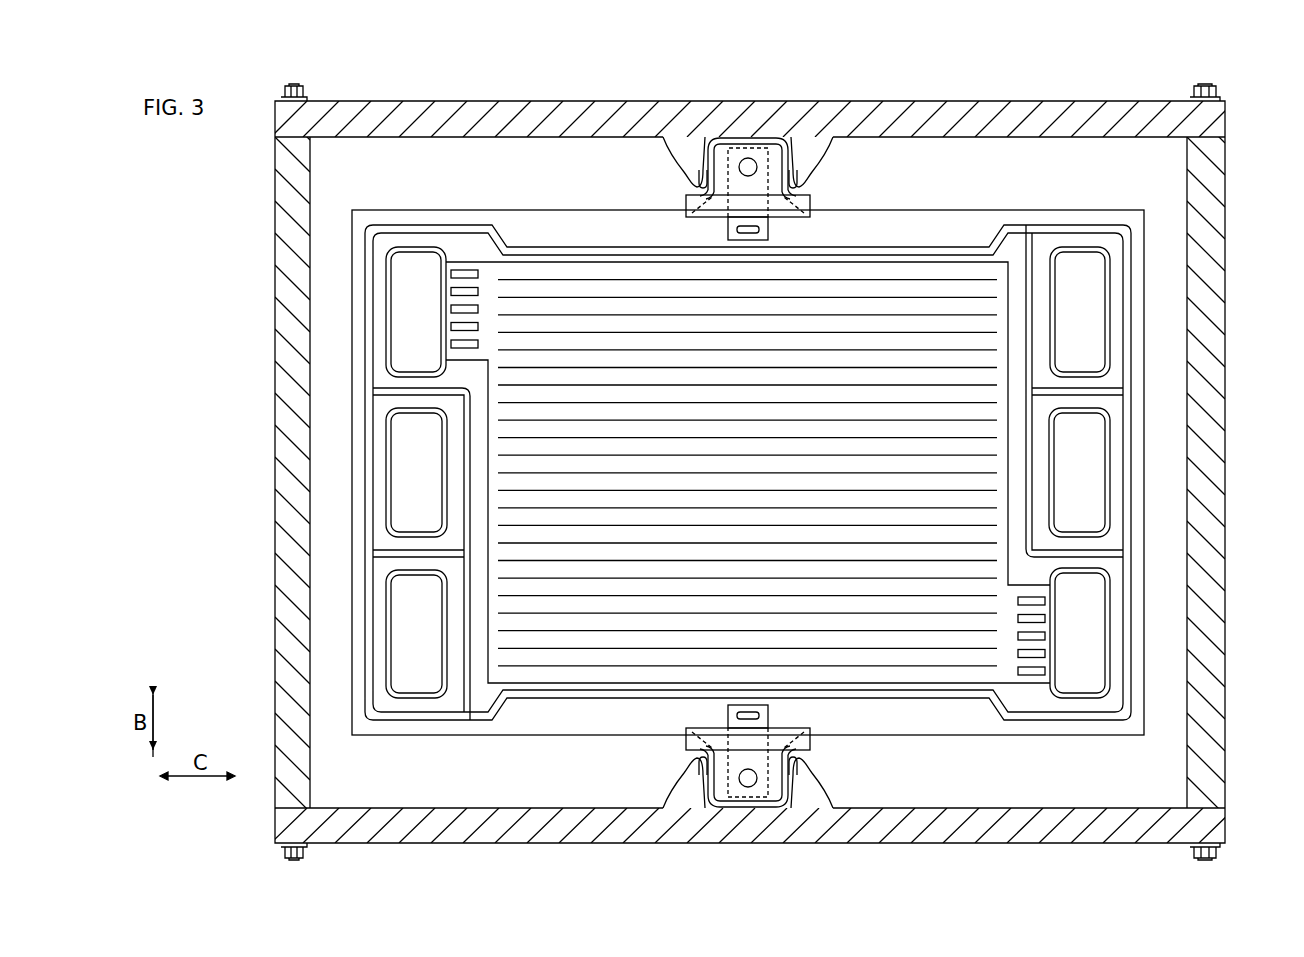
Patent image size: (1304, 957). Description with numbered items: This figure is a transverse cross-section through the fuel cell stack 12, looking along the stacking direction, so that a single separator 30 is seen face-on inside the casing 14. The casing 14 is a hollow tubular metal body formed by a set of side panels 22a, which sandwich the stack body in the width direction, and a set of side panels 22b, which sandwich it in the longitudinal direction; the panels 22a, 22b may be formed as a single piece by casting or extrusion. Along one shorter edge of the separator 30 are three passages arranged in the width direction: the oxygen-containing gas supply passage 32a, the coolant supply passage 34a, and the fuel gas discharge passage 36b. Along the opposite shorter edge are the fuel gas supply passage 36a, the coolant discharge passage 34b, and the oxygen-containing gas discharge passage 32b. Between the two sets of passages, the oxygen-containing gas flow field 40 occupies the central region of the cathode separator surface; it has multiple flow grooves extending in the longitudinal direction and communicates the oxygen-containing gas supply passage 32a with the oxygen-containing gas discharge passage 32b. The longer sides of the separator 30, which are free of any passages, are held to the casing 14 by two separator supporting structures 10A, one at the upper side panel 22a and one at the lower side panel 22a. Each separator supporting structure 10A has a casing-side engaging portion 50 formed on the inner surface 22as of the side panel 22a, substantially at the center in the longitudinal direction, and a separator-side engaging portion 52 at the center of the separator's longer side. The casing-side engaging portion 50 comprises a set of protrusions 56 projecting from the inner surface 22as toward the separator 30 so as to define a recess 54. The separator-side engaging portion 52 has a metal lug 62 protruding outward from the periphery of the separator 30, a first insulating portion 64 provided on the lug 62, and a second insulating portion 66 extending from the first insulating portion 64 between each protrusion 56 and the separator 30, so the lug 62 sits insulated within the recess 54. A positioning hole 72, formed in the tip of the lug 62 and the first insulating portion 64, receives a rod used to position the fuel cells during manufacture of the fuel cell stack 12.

The fuel cell stack 12 is at (216, 168).
The casing 14 is at (1234, 111).
The side panel 22a is at (1215, 126).
The inner surface 22as is at (464, 138).
The side panel 22b is at (1205, 385).
The separator 30 is at (1058, 210).
The oxygen-containing gas supply passage 32a is at (415, 316).
The oxygen-containing gas discharge passage 32b is at (1086, 633).
The coolant supply passage 34a is at (413, 463).
The coolant discharge passage 34b is at (1086, 486).
The fuel gas supply passage 36a is at (1088, 311).
The fuel gas discharge passage 36b is at (415, 636).
The oxygen-containing gas flow field 40 is at (541, 665).
The separator supporting structure 10A is at (612, 148).
The casing-side engaging portion 50 is at (693, 178).
The separator-side engaging portion 52 is at (698, 161).
The recess 54 is at (749, 140).
The protrusion 56 is at (801, 184).
The lug 62 is at (727, 230).
The first insulating portion 64 is at (790, 162).
The second insulating portion 66 is at (704, 196).
The positioning hole 72 is at (756, 172).